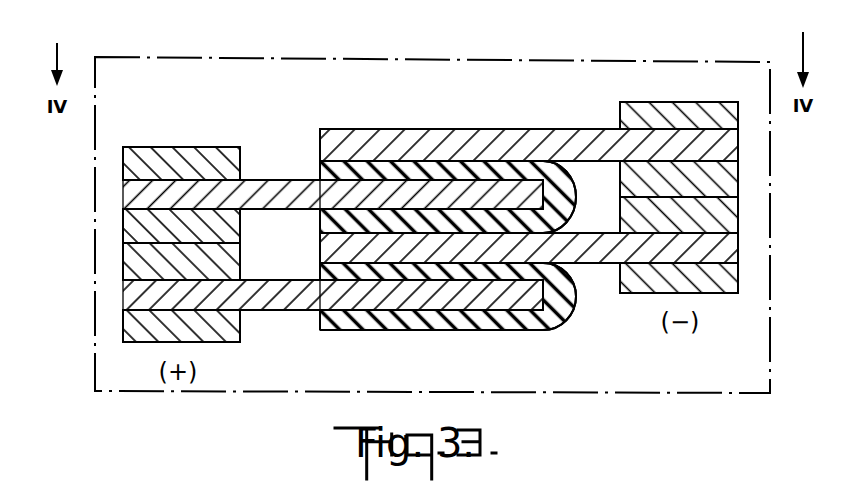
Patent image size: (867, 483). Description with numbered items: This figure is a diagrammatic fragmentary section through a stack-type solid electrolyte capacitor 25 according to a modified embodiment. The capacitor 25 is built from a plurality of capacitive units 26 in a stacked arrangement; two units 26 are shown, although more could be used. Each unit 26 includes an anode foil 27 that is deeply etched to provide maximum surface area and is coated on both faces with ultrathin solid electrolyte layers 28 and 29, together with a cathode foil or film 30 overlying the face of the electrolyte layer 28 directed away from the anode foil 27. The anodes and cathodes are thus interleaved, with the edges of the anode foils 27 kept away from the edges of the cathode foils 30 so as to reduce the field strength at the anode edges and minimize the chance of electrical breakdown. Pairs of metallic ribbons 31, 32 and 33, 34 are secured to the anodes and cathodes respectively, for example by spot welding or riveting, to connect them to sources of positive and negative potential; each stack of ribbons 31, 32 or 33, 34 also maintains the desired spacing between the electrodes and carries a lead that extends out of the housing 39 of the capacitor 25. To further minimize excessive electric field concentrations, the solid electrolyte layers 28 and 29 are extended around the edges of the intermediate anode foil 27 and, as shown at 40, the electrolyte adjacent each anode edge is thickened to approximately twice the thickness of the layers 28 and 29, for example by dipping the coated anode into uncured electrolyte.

The capacitor 25 is at (504, 47).
The capacitive unit 26 is at (319, 159).
The anode foil 27 is at (280, 211).
The solid electrolyte layer 28 is at (418, 170).
The solid electrolyte layer 29 is at (500, 332).
The cathode foil or film 30 is at (477, 150).
The metallic ribbon 31 is at (127, 163).
The metallic ribbon 32 is at (128, 229).
The metallic ribbon 33 is at (650, 106).
The metallic ribbon 34 is at (727, 185).
The housing 39 is at (286, 57).
The thickened electrolyte at anode edge 40 is at (577, 184).